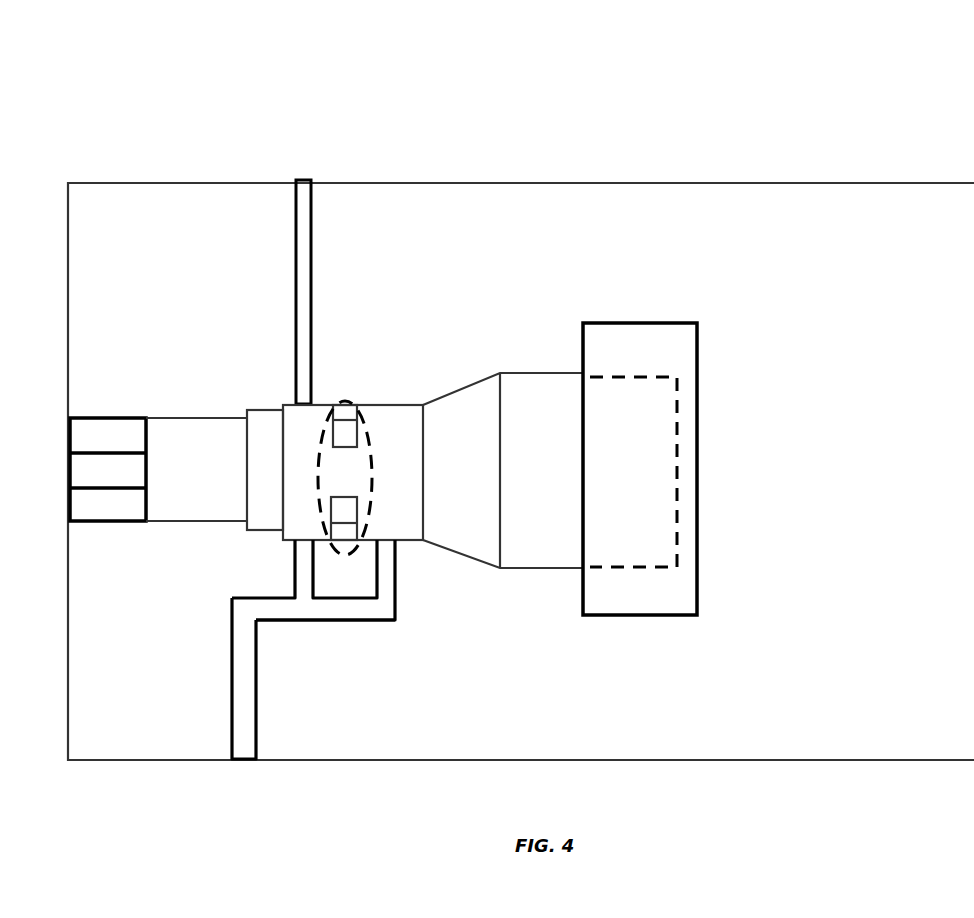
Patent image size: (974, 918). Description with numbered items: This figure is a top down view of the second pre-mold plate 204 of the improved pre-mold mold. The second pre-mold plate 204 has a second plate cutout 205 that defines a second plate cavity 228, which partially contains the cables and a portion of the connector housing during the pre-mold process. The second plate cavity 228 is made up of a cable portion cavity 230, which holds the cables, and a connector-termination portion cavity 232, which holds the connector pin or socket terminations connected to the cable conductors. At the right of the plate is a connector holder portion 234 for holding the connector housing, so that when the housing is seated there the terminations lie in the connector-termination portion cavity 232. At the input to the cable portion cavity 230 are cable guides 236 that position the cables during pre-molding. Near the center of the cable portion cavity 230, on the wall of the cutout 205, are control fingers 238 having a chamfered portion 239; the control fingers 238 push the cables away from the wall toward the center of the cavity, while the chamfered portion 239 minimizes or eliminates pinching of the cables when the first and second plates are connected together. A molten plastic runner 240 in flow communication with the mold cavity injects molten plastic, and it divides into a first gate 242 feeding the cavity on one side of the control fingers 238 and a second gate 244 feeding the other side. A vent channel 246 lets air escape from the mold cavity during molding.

The second pre-mold plate 204 is at (818, 131).
The second plate cutout 205 is at (533, 330).
The second plate cavity 228 is at (263, 447).
The cable portion cavity 230 is at (473, 482).
The connector-termination portion cavity 232 is at (552, 552).
The connector holder portion 234 is at (680, 593).
The cable guides 236 is at (103, 503).
The control fingers 238 is at (378, 418).
The chamfered portion 239 is at (345, 405).
The molten plastic runner 240 is at (260, 720).
The first gate 242 is at (295, 573).
The second gate 244 is at (378, 608).
The vent channel 246 is at (296, 215).